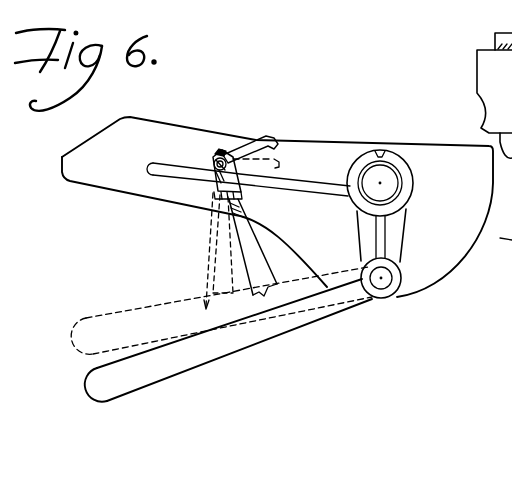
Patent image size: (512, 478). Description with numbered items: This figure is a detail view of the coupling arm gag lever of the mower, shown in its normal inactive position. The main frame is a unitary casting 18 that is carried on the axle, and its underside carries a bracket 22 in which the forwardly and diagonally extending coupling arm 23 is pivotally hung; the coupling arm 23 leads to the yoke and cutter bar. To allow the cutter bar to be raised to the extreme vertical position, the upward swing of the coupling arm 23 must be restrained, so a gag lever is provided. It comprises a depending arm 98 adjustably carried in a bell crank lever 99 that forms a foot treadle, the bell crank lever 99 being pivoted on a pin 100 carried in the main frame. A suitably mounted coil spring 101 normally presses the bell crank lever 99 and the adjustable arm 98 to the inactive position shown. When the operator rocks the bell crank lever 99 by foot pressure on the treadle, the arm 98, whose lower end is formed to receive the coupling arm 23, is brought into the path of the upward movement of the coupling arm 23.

The unitary casting 18 is at (438, 147).
The bracket 22 is at (397, 248).
The coupling arm 23 is at (209, 349).
The depending arm 98 is at (240, 252).
The bell crank lever 99 is at (274, 142).
The pin 100 is at (225, 156).
The coil spring 101 is at (219, 158).